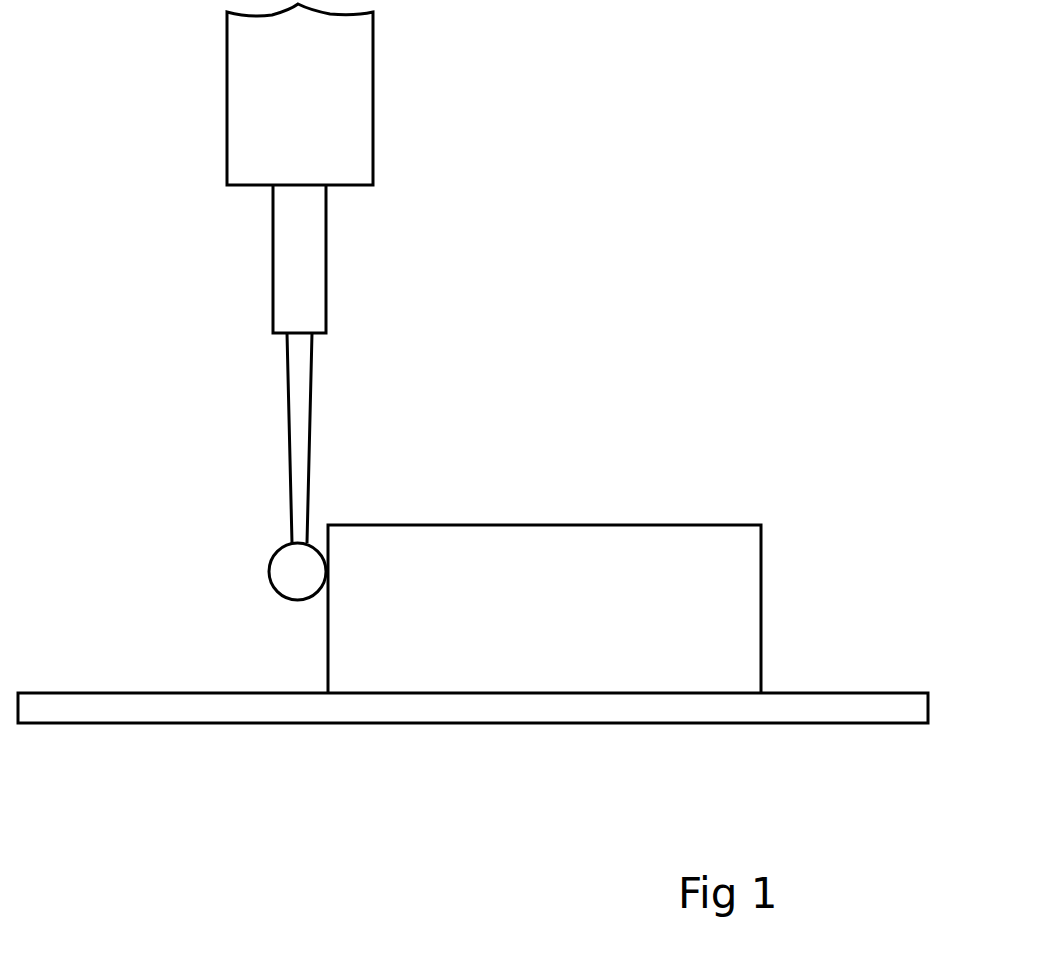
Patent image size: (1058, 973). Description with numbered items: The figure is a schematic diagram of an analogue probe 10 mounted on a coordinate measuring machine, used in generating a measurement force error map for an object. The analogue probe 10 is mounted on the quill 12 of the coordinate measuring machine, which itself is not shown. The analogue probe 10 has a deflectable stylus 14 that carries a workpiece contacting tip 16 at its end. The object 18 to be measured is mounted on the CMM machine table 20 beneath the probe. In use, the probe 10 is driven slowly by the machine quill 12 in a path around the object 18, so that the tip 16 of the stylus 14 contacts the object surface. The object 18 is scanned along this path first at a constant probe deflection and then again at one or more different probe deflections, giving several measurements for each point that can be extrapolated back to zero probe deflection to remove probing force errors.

The analogue probe 10 is at (373, 332).
The quill 12 is at (350, 99).
The deflectable stylus 14 is at (288, 429).
The workpiece contacting tip 16 is at (295, 578).
The object 18 is at (705, 558).
The CMM machine table 20 is at (182, 705).